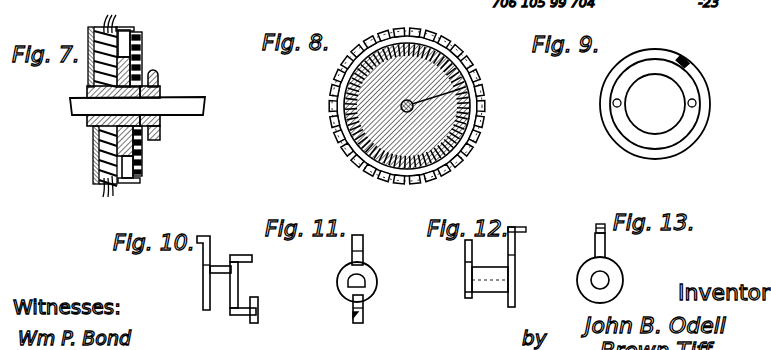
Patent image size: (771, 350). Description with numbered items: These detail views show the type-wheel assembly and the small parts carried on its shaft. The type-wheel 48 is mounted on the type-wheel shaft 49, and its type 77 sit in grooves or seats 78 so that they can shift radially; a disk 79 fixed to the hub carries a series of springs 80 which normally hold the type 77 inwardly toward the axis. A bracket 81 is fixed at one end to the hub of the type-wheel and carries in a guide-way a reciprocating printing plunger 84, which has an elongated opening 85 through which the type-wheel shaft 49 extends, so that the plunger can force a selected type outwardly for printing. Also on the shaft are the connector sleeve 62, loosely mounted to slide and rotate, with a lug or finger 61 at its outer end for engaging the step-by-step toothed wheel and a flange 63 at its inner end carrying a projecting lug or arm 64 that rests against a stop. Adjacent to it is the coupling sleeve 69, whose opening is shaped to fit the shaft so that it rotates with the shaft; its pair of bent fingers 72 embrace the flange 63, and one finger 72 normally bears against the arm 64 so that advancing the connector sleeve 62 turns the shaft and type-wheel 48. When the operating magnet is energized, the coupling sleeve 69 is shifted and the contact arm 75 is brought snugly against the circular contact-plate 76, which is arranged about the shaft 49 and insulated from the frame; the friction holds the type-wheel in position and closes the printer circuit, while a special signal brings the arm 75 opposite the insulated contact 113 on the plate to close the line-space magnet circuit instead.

In FIG. 7, the type-wheel 48 is at (136, 44).
In FIG. 8, the type-wheel 48 is at (458, 51).
In FIG. 7, the type-wheel shaft 49 is at (205, 106).
In FIG. 8, the type-wheel shaft 49 is at (460, 89).
In FIG. 12, the lug or finger 61 is at (515, 244).
In FIG. 13, the lug or finger 61 is at (605, 242).
In FIG. 12, the connector sleeve 62 is at (489, 285).
In FIG. 13, the connector sleeve 62 is at (593, 279).
In FIG. 12, the flange 63 is at (465, 286).
In FIG. 12, the projecting lug or arm 64 is at (465, 244).
In FIG. 10, the coupling sleeve 69 is at (217, 296).
In FIG. 11, the coupling sleeve 69 is at (337, 283).
In FIG. 10, the bent fingers 72 is at (243, 300).
In FIG. 11, the bent fingers 72 is at (363, 257).
In FIG. 10, the contact arm 75 is at (208, 240).
In FIG. 9, the circular contact-plate 76 is at (690, 82).
In FIG. 7, the type 77 is at (128, 29).
In FIG. 8, the type 77 is at (383, 35).
In FIG. 7, the grooves or seats 78 is at (142, 66).
In FIG. 8, the grooves or seats 78 is at (367, 43).
In FIG. 7, the disk 79 is at (93, 144).
In FIG. 7, the springs 80 is at (109, 105).
In FIG. 7, the bracket 81 is at (158, 78).
In FIG. 7, the printing plunger 84 is at (158, 71).
In FIG. 7, the elongated opening 85 is at (163, 90).
In FIG. 9, the insulated contact 113 is at (684, 62).